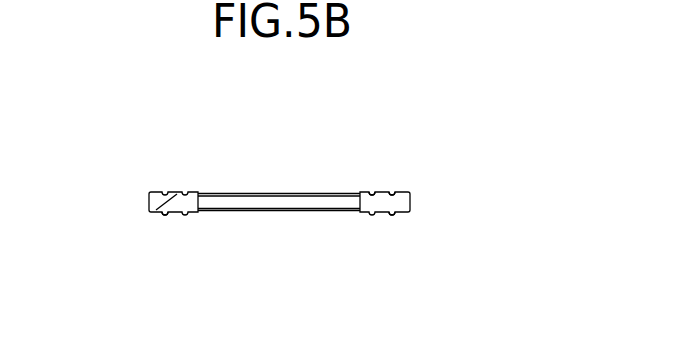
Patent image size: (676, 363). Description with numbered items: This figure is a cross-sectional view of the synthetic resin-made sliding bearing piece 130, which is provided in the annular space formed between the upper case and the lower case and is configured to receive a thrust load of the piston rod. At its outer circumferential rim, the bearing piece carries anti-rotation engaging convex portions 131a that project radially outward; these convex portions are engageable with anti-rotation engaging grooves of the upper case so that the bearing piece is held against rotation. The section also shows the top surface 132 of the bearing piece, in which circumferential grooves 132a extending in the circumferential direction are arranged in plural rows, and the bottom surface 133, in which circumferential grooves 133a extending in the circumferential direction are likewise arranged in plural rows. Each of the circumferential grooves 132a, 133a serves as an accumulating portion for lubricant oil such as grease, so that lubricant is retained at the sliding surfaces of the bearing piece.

The synthetic resin-made sliding bearing piece 130 is at (135, 172).
The anti-rotation engaging convex portion 131a is at (410, 196).
The top surface 132 is at (390, 192).
The circumferential groove 132a is at (376, 192).
The bottom surface 133 is at (175, 212).
The circumferential groove 133a is at (395, 212).